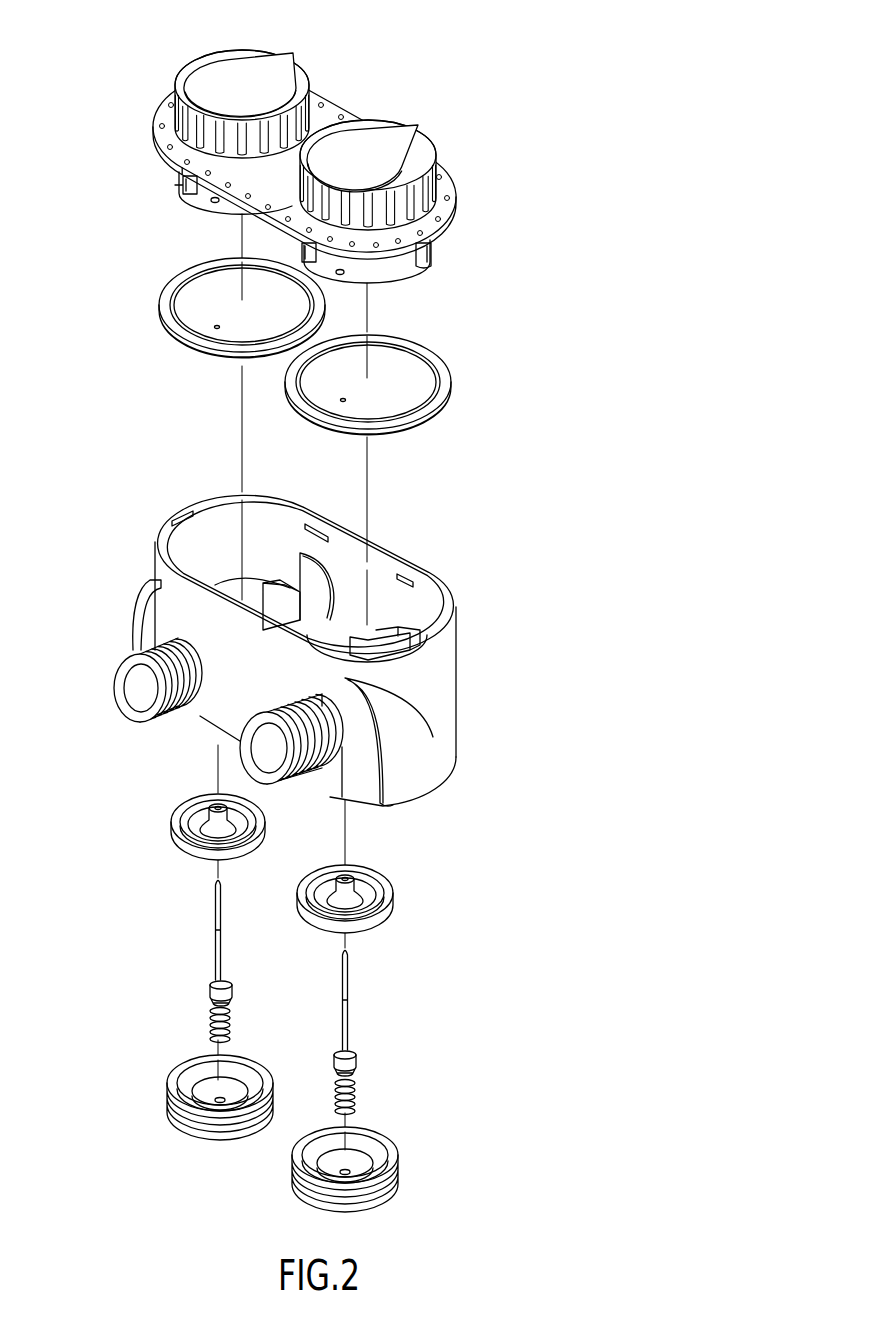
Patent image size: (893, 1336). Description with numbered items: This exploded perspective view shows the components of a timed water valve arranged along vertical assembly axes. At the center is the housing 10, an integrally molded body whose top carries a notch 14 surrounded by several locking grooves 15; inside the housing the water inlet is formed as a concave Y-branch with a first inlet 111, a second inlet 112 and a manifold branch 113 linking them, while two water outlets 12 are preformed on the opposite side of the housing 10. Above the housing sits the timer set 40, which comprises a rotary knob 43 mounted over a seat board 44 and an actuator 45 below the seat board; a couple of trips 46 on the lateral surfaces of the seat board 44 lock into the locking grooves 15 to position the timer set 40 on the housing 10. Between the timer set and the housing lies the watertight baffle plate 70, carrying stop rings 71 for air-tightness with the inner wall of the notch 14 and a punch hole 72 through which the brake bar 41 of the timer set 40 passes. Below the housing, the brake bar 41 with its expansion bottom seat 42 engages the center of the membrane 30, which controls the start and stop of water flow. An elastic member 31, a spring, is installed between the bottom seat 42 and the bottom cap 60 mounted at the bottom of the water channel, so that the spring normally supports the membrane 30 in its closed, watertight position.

The housing 10 is at (286, 616).
The water outlets 12 is at (133, 680).
The notch 14 is at (175, 548).
The locking grooves 15 is at (300, 500).
The membrane 30 is at (180, 845).
The elastic member 31 is at (210, 1020).
The timer set 40 is at (319, 160).
The brake bar 41 is at (215, 918).
The expansion bottom seat 42 is at (233, 988).
The rotary knob 43 is at (218, 75).
The seat board 44 is at (165, 115).
The actuator 45 is at (185, 195).
The trips 46 is at (430, 258).
The bottom cap 60 is at (166, 1103).
The watertight baffle plate 70 is at (405, 380).
The stop rings 71 is at (455, 408).
The punch hole 72 is at (215, 326).
The first inlet 111 is at (378, 640).
The second inlet 112 is at (288, 604).
The manifold branch 113 is at (345, 597).